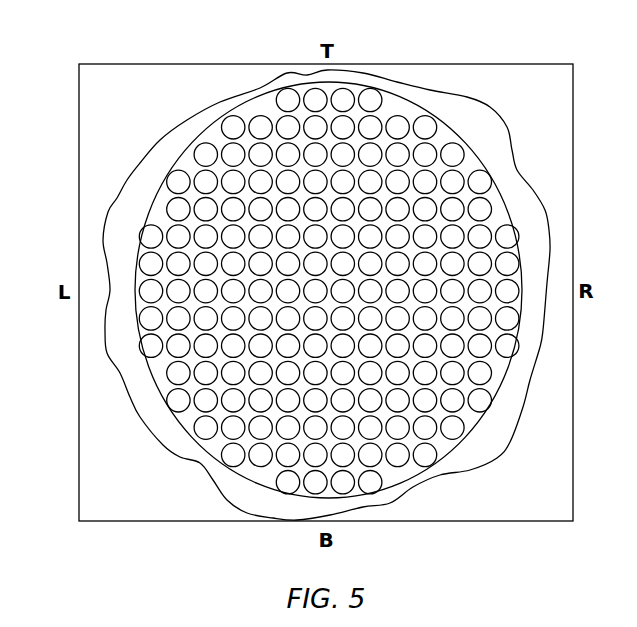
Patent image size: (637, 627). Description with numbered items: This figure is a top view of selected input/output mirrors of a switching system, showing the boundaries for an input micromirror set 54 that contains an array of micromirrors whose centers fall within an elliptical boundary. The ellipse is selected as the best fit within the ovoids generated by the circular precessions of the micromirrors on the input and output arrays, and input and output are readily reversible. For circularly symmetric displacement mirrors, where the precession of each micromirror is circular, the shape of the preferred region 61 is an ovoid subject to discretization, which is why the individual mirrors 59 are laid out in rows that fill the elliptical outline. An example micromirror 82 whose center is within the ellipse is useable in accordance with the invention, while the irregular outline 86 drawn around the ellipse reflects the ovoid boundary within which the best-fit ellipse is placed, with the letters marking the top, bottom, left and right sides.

The input micromirror set 54 is at (440, 64).
The array elements (circles) 59 is at (507, 265).
The preferred region 61 is at (263, 97).
The micromirror 82 is at (290, 271).
The irregular outline 86 is at (110, 290).